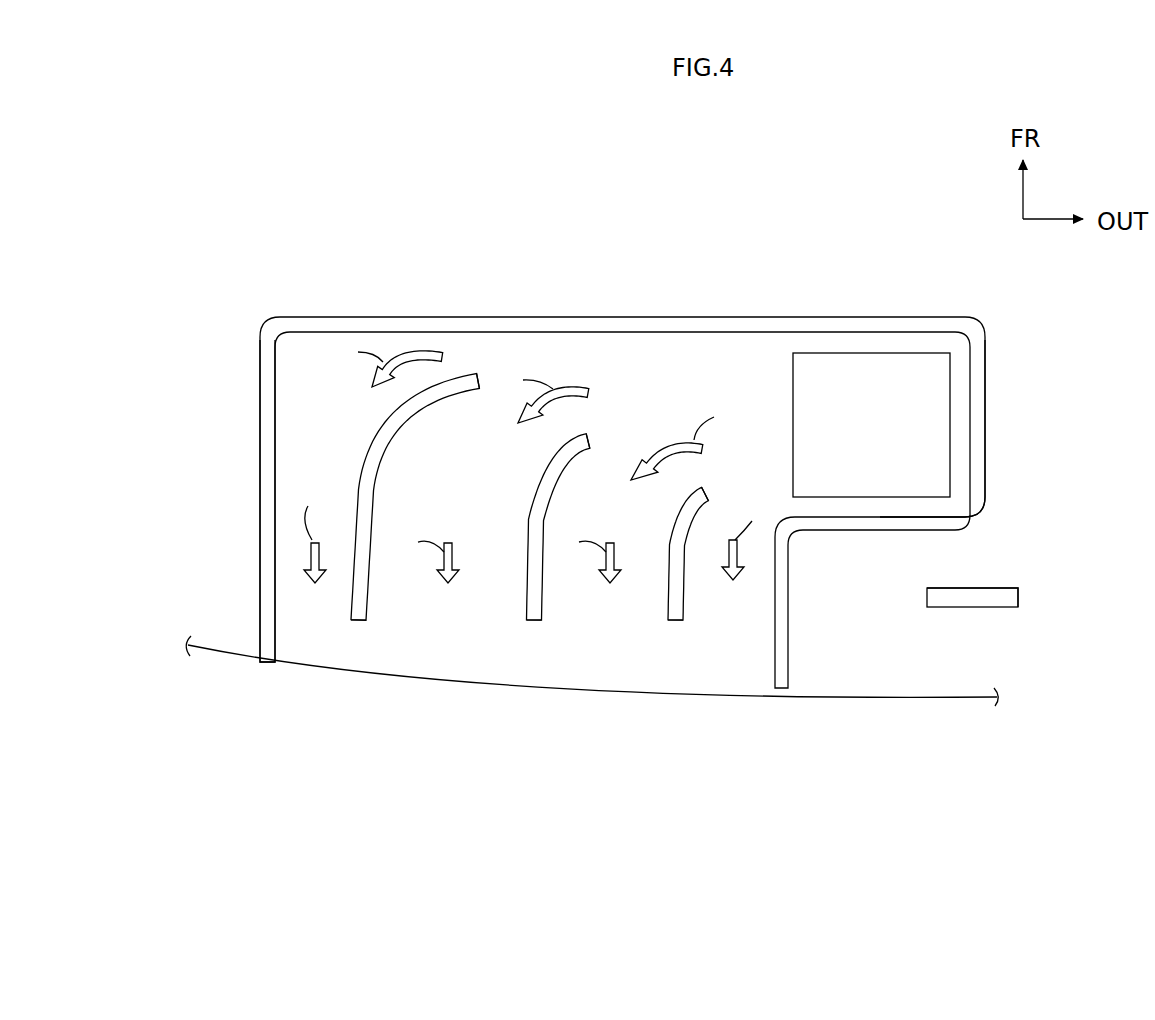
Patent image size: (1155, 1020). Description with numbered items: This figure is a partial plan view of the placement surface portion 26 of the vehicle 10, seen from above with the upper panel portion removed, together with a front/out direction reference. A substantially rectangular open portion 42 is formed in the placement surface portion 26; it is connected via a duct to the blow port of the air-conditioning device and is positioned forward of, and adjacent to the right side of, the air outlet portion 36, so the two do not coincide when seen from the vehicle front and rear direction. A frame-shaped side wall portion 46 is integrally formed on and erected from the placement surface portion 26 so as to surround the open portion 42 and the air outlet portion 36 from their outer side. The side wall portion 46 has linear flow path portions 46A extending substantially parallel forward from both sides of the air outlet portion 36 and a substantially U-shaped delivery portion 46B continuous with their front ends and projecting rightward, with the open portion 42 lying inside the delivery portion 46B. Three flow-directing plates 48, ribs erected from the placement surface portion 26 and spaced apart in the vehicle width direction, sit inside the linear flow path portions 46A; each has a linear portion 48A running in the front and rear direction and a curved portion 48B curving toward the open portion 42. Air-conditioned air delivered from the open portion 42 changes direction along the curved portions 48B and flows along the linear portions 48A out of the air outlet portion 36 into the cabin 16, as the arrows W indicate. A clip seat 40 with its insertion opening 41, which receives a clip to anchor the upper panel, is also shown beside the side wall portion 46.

The vehicle 10 is at (308, 691).
The cabin 16 is at (560, 824).
The placement surface portion 26 is at (848, 668).
The air outlet portion 36 is at (572, 698).
The clip seat 40 is at (996, 582).
The insertion opening 41 is at (1016, 590).
The open portion 42 is at (898, 358).
The side wall portion 46 is at (688, 302).
The linear flow path portion 46A is at (259, 536).
The delivery portion 46B is at (988, 370).
The flow-directing plate 48 is at (529, 489).
The linear portion 48A is at (367, 598).
The curved portion 48B is at (472, 376).